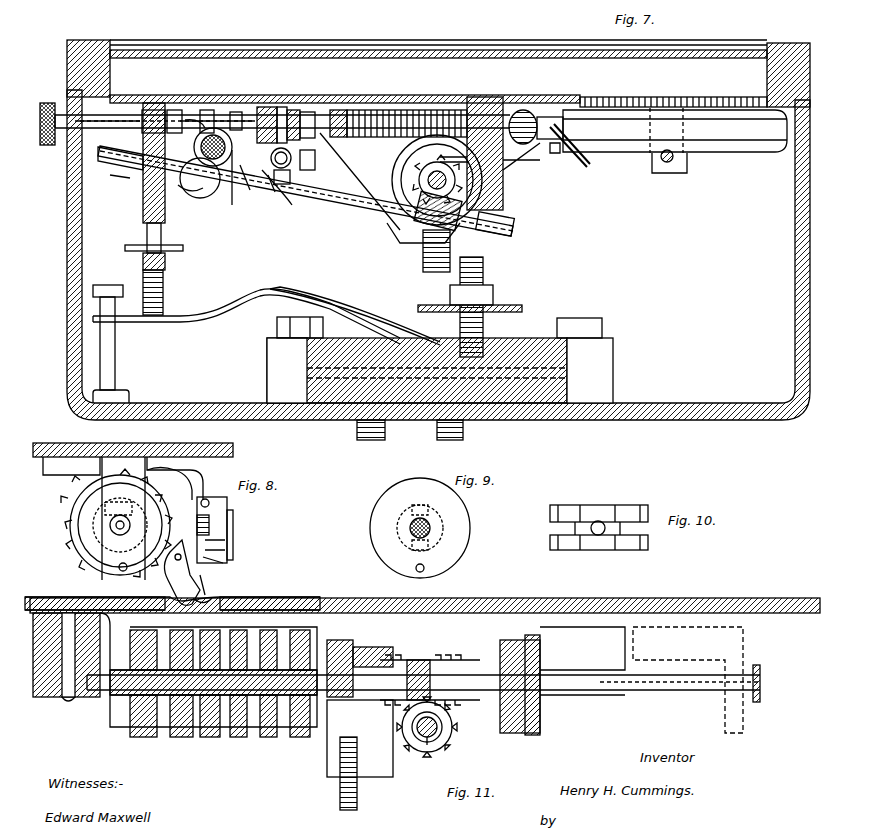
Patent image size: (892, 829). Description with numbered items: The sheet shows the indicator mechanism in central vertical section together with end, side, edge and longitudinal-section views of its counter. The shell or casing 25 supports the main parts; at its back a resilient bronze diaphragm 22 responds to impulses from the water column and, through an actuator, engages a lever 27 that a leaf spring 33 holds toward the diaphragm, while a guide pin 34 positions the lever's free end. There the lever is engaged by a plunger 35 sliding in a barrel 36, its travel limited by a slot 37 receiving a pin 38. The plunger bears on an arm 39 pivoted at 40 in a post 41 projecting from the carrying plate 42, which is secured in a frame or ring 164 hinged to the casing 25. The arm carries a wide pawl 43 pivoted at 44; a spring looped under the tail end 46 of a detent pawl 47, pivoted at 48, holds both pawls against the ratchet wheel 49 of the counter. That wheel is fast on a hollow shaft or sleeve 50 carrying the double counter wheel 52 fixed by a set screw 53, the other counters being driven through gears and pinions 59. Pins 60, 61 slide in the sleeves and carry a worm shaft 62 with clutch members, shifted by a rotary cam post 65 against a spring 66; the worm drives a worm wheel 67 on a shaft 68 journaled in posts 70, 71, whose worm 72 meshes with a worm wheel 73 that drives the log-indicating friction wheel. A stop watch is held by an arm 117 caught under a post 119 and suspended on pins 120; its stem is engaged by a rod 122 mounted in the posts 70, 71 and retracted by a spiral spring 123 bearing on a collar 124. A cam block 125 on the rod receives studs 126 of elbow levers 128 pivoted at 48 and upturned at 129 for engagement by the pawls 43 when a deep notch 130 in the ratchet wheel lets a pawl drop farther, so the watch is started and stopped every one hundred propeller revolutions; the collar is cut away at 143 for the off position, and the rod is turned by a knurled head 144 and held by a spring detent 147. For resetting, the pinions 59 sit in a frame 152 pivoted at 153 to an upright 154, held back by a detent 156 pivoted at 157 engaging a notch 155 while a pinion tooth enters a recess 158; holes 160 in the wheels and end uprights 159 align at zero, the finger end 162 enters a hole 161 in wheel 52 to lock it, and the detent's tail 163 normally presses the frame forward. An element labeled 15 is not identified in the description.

In FIG. 7, the pivot pin 15 is at (282, 168).
In FIG. 7, the diaphragm 22 is at (290, 362).
In FIG. 7, the shell or casing 25 is at (793, 286).
In FIG. 7, the lever 27 is at (250, 290).
In FIG. 7, the leaf spring 33 is at (295, 290).
In FIG. 7, the guide pin 34 is at (118, 360).
In FIG. 7, the plunger 35 is at (143, 200).
In FIG. 7, the barrel or guiding support 36 is at (165, 260).
In FIG. 7, the slot 37 is at (147, 236).
In FIG. 7, the pin 38 is at (125, 248).
In FIG. 7, the arm 39 is at (182, 195).
In FIG. 7, the pivot 40 is at (278, 207).
In FIG. 7, the post 41 is at (275, 193).
In FIG. 7, the carrying plate 42 is at (310, 112).
In FIG. 7, the wide pawl 43 is at (187, 118).
In FIG. 7, the pivot 44 is at (190, 190).
In FIG. 7, the tail end 46 is at (315, 162).
In FIG. 7, the detent pawl 47 is at (245, 192).
In FIG. 7, the pivot 48 is at (288, 186).
In FIG. 7, the ratchet wheel 49 is at (230, 206).
In FIG. 11, the ratchet wheel 49 is at (345, 645).
In FIG. 7, the shaft or sleeve 50 is at (240, 112).
In FIG. 11, the shaft or sleeve 50 is at (293, 737).
In FIG. 9, the double counter wheel 52 is at (470, 525).
In FIG. 10, the double counter wheel 52 is at (565, 550).
In FIG. 11, the double counter wheel 52 is at (155, 737).
In FIG. 11, the set screw 53 is at (185, 737).
In FIG. 8, the pinions 59 is at (172, 578).
In FIG. 11, the pin 60 is at (237, 737).
In FIG. 11, the pin 61 is at (678, 690).
In FIG. 7, the worm shaft 62 is at (205, 110).
In FIG. 11, the worm shaft 62 is at (420, 663).
In FIG. 11, the rotary cam post 65 is at (50, 700).
In FIG. 11, the spring 66 is at (762, 682).
In FIG. 11, the worm wheel 67 is at (452, 727).
In FIG. 7, the shaft 68 is at (358, 218).
In FIG. 7, the post 70 is at (128, 95).
In FIG. 7, the post 71 is at (503, 200).
In FIG. 7, the worm 72 is at (412, 232).
In FIG. 7, the worm wheel 73 is at (420, 170).
In FIG. 7, the arm 117 is at (678, 160).
In FIG. 7, the post 119 is at (665, 173).
In FIG. 7, the pins 120 is at (575, 170).
In FIG. 7, the rod or plunger 122 is at (62, 113).
In FIG. 11, the rod or plunger 122 is at (427, 745).
In FIG. 7, the spiral spring 123 is at (405, 97).
In FIG. 7, the collar 124 is at (340, 108).
In FIG. 7, the cam block 125 is at (283, 107).
In FIG. 7, the stud 126 is at (270, 107).
In FIG. 7, the elbow-shaped levers 128 is at (294, 110).
In FIG. 7, the upturned ends 129 is at (110, 176).
In FIG. 7, the deep tooth or notch 130 is at (220, 128).
In FIG. 7, the cut-away 143 is at (355, 95).
In FIG. 7, the knurled head 144 is at (46, 103).
In FIG. 7, the spring detent 147 is at (98, 156).
In FIG. 8, the frame 152 is at (227, 518).
In FIG. 8, the pivot 153 is at (205, 496).
In FIG. 8, the upright 154 is at (210, 503).
In FIG. 8, the notch 155 is at (215, 600).
In FIG. 8, the detent 156 is at (207, 590).
In FIG. 8, the pivot 157 is at (225, 545).
In FIG. 8, the notch or recess 158 is at (225, 557).
In FIG. 8, the end uprights 159 is at (233, 538).
In FIG. 8, the holes 160 is at (118, 569).
In FIG. 9, the holes 160 is at (425, 568).
In FIG. 11, the holes 160 is at (115, 726).
In FIG. 8, the hole or notch 161 is at (108, 510).
In FIG. 9, the hole or notch 161 is at (412, 505).
In FIG. 10, the hole or notch 161 is at (605, 522).
In FIG. 8, the upturned finger end 162 is at (112, 508).
In FIG. 8, the tail end 163 is at (228, 528).
In FIG. 7, the frame or ring 164 is at (100, 58).